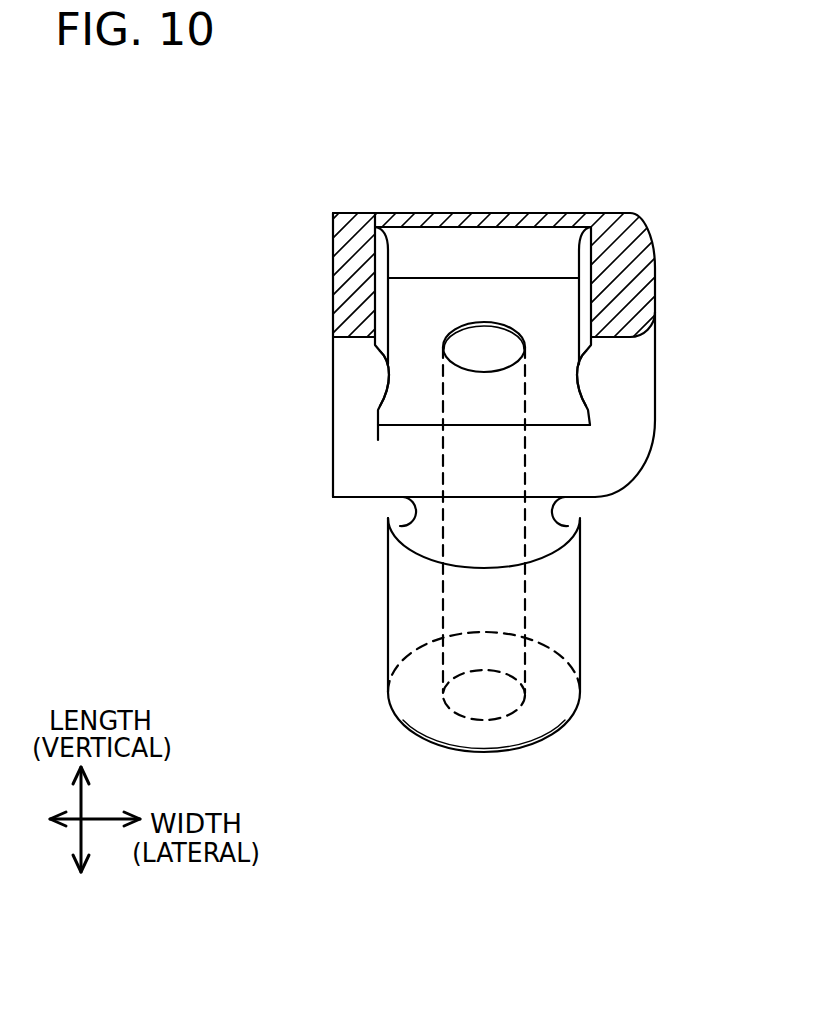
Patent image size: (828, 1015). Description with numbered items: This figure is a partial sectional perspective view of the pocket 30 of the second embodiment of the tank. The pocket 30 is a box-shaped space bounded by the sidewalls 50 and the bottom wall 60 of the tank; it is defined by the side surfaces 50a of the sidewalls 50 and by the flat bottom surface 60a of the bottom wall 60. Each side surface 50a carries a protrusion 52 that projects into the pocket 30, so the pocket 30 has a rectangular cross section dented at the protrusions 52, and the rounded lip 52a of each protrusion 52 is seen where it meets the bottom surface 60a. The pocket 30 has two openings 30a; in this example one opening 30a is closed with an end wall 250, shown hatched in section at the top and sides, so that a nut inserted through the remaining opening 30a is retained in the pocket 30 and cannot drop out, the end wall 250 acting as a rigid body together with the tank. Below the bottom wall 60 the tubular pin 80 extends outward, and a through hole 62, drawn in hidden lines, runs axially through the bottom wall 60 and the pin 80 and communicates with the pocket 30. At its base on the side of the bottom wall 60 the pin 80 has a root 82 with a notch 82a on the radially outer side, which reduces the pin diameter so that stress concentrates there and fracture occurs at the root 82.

The end wall 250 is at (417, 213).
The sidewall 50 is at (337, 265).
The side surface 50a is at (383, 309).
The protrusion 52 is at (384, 399).
The protrusion of lip portion 52a is at (395, 373).
The pocket 30 is at (543, 378).
The opening 30a is at (565, 412).
The bottom wall 60 is at (547, 465).
The bottom surface 60a is at (424, 412).
The through hole 62 is at (527, 606).
The pin 80 is at (580, 680).
The root 82 is at (428, 512).
The notch 82a is at (552, 513).